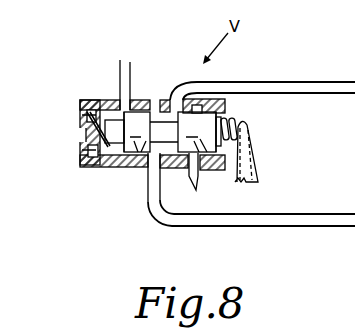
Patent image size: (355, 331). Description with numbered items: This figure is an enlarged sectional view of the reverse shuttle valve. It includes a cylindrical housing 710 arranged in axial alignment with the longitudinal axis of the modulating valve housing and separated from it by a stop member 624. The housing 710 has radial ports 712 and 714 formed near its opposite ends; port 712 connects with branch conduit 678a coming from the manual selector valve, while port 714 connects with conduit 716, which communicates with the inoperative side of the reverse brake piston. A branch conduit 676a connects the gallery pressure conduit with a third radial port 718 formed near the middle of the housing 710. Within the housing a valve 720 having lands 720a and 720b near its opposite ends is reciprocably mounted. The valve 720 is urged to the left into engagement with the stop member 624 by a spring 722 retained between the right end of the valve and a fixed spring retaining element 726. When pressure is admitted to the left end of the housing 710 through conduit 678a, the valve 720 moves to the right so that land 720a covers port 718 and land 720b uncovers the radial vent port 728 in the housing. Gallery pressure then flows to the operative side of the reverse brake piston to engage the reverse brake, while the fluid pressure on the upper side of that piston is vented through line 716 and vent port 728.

The stop member 624 is at (83, 128).
The branch conduit 676a is at (307, 200).
The branch conduit 678a is at (130, 62).
The cylindrical housing 710 is at (170, 108).
The radial port 712 is at (119, 98).
The radial port 714 is at (200, 80).
The conduit 716 is at (296, 82).
The third radial port 718 is at (160, 178).
The valve 720 is at (148, 148).
The land 720a is at (130, 153).
The land 720b is at (205, 153).
The spring 722 is at (232, 118).
The spring retaining element 726 is at (254, 150).
The radial vent port 728 is at (190, 182).